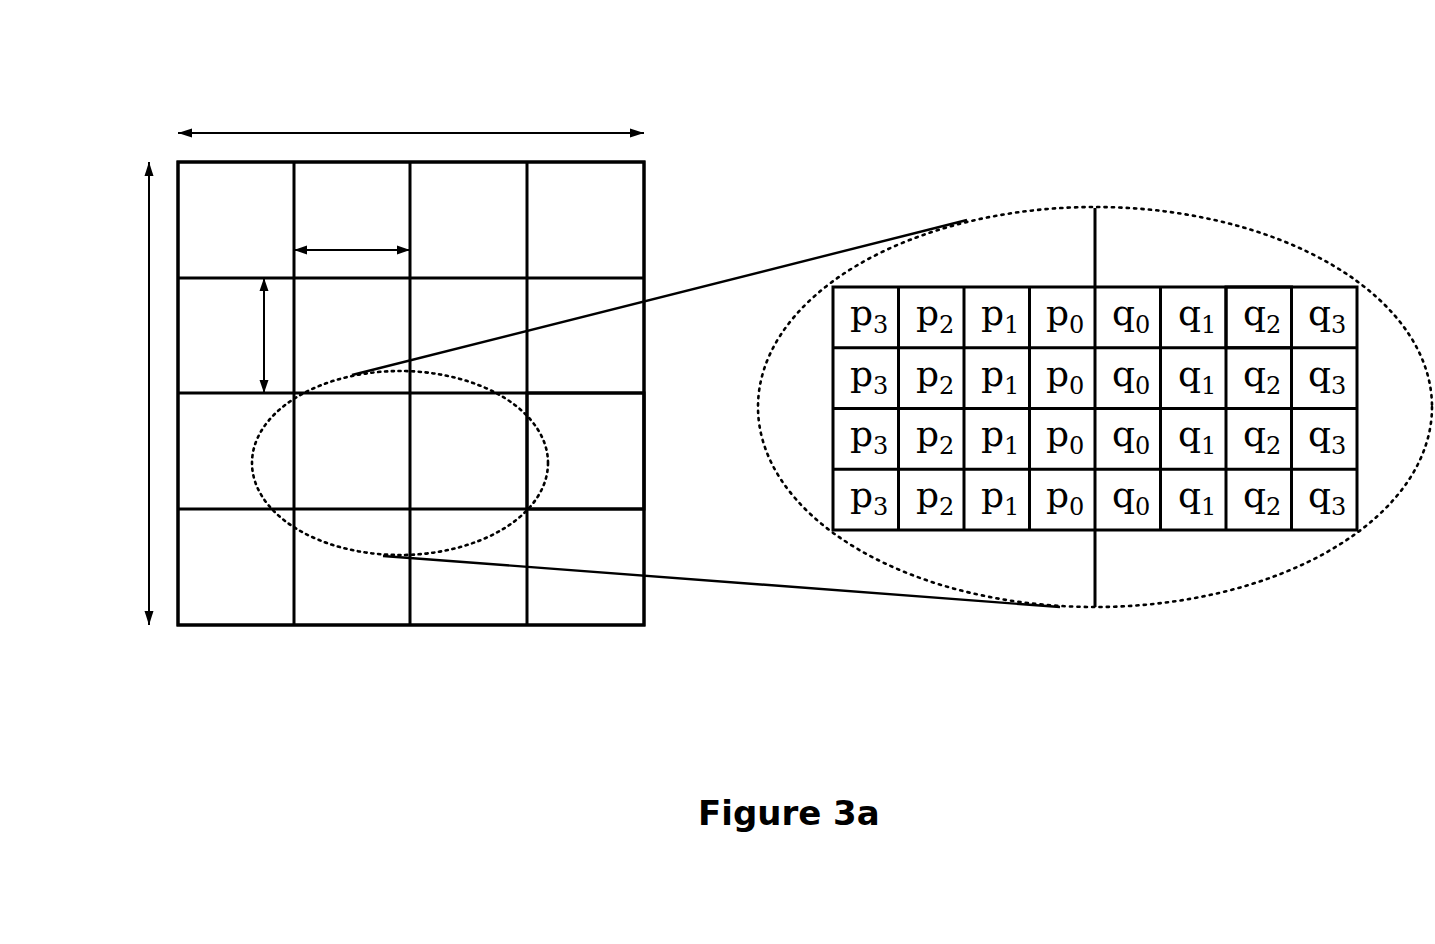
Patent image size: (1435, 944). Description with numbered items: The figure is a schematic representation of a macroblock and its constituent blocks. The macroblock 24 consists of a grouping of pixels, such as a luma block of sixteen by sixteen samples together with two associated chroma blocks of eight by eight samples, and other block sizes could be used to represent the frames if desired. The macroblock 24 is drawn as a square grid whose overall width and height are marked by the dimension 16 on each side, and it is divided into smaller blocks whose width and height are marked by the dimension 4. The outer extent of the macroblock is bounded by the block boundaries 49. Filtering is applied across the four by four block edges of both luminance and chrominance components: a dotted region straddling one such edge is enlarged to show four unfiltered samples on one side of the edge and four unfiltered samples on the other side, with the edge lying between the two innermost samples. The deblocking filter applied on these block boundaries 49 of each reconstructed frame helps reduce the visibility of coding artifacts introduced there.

The macroblock 24 is at (595, 627).
The block boundary 49 is at (645, 210).
The macroblock dimension (16 pixels) 16 is at (378, 362).
The block dimension (4 pixels) 4 is at (325, 301).